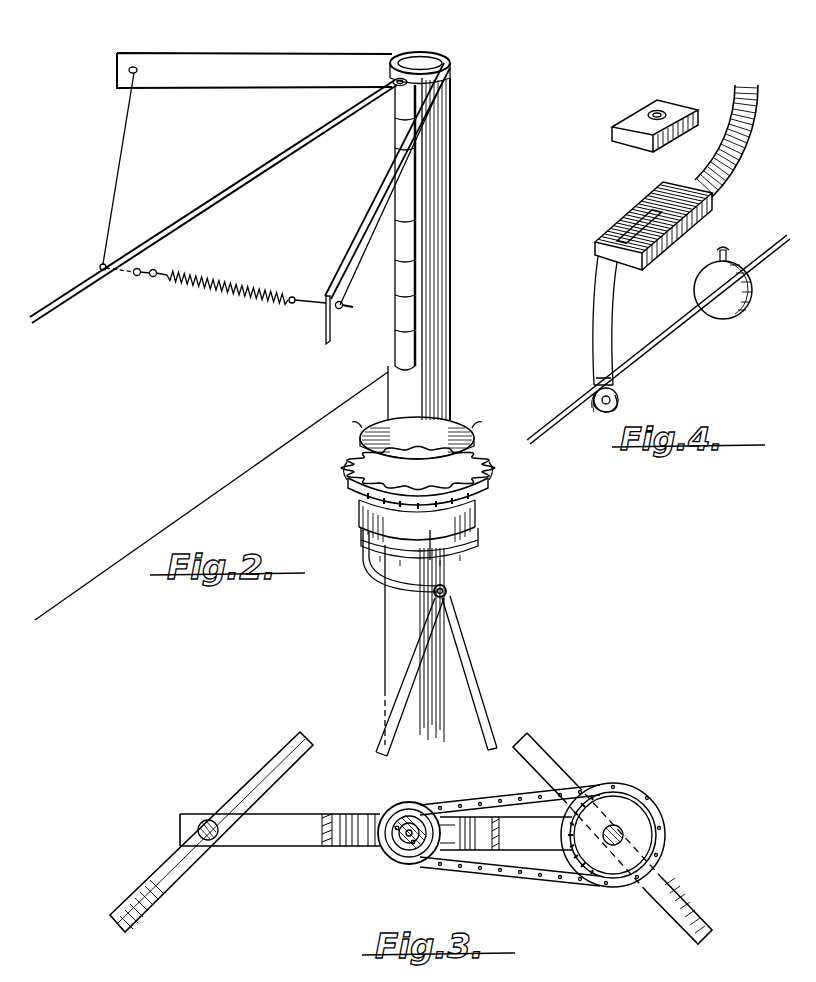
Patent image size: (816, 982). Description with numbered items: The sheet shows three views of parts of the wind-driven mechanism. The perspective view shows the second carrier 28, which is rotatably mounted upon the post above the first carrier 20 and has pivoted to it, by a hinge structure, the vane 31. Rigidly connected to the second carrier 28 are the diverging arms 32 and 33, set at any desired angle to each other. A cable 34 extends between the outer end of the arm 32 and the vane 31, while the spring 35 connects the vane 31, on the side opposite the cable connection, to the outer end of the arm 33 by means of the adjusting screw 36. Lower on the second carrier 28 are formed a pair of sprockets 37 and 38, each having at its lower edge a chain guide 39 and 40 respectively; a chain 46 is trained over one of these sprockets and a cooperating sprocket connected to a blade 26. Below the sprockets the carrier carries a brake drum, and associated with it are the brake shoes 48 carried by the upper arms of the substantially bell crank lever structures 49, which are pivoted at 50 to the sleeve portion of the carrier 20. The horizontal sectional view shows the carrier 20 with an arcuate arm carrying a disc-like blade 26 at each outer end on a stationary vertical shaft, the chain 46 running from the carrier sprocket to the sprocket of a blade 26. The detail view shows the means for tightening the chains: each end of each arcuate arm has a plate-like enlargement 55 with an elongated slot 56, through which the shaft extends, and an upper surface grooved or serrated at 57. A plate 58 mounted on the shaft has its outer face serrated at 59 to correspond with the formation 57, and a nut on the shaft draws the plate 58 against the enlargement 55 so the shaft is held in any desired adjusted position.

In FIG. 3, the carrier 20 is at (291, 816).
In FIG. 3, the disc-like blade 26 is at (275, 760).
In FIG. 2, the second carrier 28 is at (440, 241).
In FIG. 3, the second carrier 28 is at (388, 852).
In FIG. 2, the vane 31 is at (213, 350).
In FIG. 2, the diverging arm 32 is at (246, 62).
In FIG. 2, the diverging arm 33 is at (365, 240).
In FIG. 2, the cable 34 is at (126, 172).
In FIG. 2, the spring 35 is at (236, 290).
In FIG. 2, the adjusting screw 36 is at (315, 315).
In FIG. 2, the sprocket 37 is at (348, 460).
In FIG. 2, the sprocket 38 is at (350, 484).
In FIG. 2, the chain guide 39 is at (355, 437).
In FIG. 2, the chain guide 40 is at (362, 496).
In FIG. 3, the chain 46 is at (470, 786).
In FIG. 2, the brake shoe 48 is at (378, 545).
In FIG. 2, the bell crank lever structure 49 is at (368, 585).
In FIG. 2, the pivot 50 is at (450, 591).
In FIG. 4, the plate-like enlargement 55 is at (695, 232).
In FIG. 4, the elongated slot 56 is at (624, 214).
In FIG. 4, the serrated formation 57 is at (656, 196).
In FIG. 4, the plate 58 is at (633, 124).
In FIG. 4, the serrated face 59 is at (680, 132).